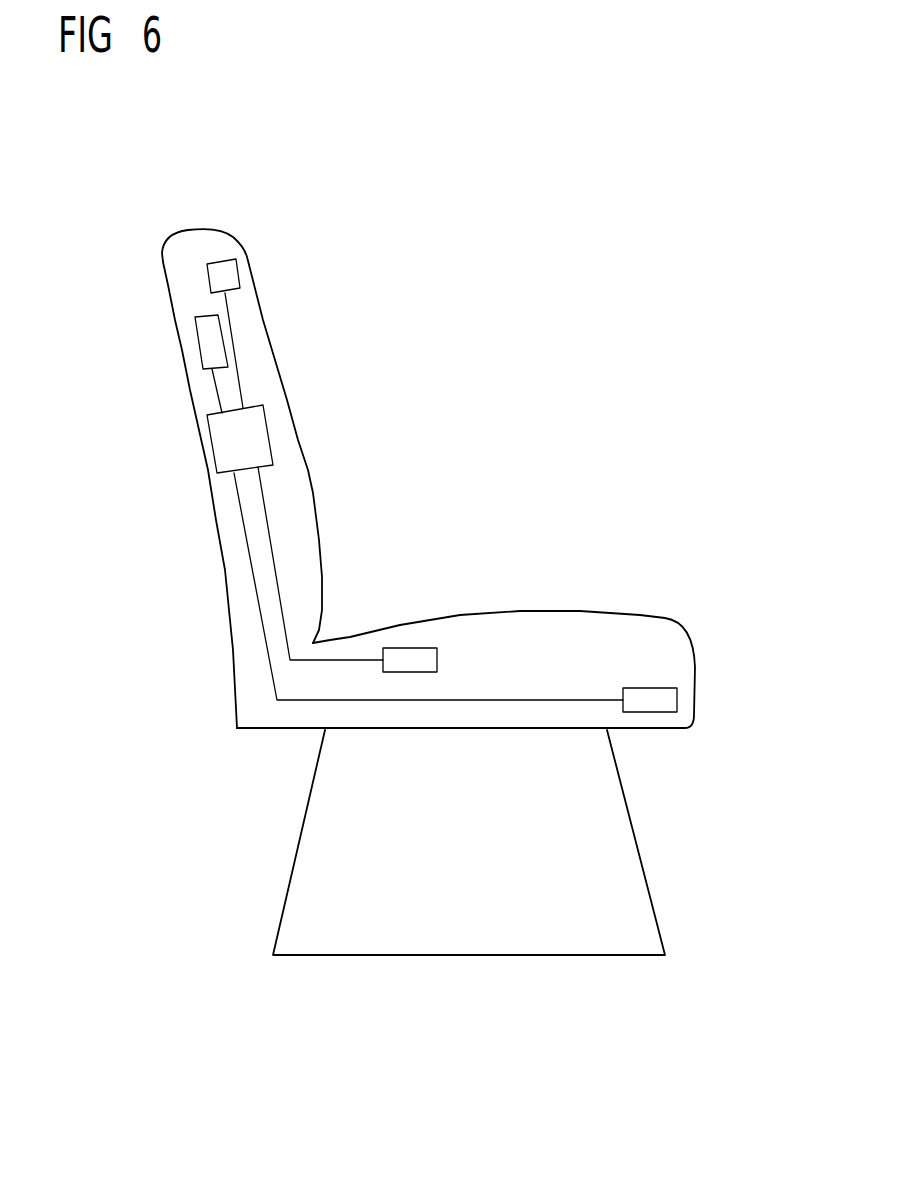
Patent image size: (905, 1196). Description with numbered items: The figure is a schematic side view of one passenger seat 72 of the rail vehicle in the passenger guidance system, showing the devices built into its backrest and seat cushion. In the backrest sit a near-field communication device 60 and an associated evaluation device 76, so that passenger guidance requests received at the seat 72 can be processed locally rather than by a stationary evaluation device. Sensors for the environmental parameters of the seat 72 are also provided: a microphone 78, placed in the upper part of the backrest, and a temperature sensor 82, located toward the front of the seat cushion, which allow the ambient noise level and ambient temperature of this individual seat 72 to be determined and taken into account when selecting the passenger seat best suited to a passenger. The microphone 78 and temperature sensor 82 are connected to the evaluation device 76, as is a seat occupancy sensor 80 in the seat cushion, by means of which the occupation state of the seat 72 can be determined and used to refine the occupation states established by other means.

The near-field communication device 60 is at (208, 347).
The seat 72 is at (313, 492).
The evaluation device 76 is at (218, 443).
The microphone 78 is at (230, 273).
The seat occupancy sensor 80 is at (407, 657).
The temperature sensor 82 is at (667, 698).